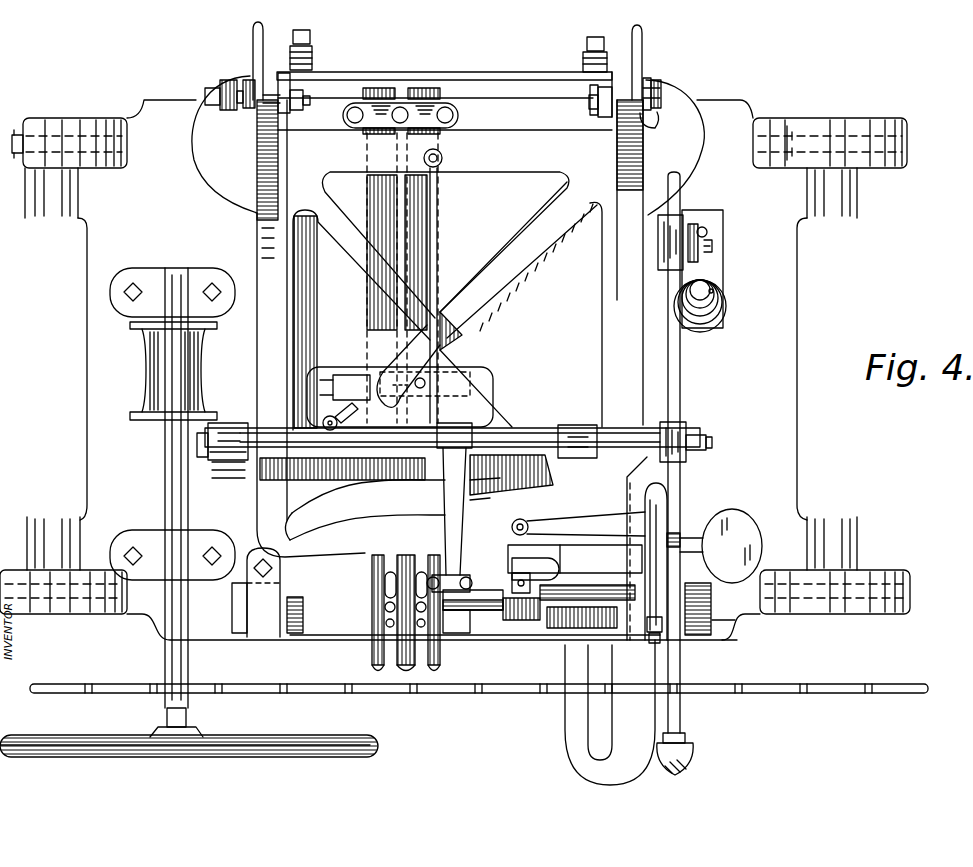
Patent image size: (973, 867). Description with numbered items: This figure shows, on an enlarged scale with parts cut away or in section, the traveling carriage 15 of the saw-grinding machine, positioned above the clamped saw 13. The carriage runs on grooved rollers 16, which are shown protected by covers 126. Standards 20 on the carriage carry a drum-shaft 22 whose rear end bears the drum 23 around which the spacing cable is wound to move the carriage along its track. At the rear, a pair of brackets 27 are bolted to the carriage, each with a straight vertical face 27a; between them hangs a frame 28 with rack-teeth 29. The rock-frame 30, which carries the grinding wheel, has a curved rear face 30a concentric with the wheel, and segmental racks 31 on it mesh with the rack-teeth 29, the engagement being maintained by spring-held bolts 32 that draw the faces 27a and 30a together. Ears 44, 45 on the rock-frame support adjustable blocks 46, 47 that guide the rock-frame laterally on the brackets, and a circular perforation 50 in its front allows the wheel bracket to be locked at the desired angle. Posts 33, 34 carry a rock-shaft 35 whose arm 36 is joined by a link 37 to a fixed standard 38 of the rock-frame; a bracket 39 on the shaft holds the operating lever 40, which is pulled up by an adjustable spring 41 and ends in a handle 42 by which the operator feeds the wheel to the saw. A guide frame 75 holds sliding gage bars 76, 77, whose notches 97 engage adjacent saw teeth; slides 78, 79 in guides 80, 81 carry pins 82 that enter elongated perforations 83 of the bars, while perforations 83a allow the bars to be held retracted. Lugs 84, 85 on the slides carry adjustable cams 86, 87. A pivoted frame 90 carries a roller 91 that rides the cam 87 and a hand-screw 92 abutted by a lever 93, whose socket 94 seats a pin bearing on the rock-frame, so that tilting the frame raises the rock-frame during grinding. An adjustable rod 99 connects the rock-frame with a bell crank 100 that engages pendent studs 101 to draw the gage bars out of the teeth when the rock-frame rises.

The saw 13 is at (820, 694).
The carriage 15 is at (96, 411).
The grooved rollers 16 is at (14, 156).
The standards 20 is at (160, 283).
The drum-shaft 22 is at (170, 463).
The drum 23 is at (148, 369).
The brackets 27 is at (254, 38).
The vertically disposed face 27a is at (268, 92).
The frame 28 is at (445, 71).
The rack-teeth 29 is at (607, 95).
The rock-frame 30 is at (607, 290).
The rear face 30a is at (268, 110).
The segmental racks 31 is at (286, 114).
The spring-held bolts 32 is at (306, 40).
The post 33 is at (575, 421).
The post 34 is at (226, 426).
The rock-shaft 35 is at (523, 420).
The arm 36 is at (476, 484).
The link 37 is at (443, 578).
The fixed standard 38 is at (431, 251).
The bracket 39 is at (688, 433).
The operating lever 40 is at (681, 364).
The adjustable spring 41 is at (716, 298).
The handle 42 is at (694, 758).
The ear 44 is at (675, 147).
The ear 45 is at (224, 144).
The adjustable block 46 is at (660, 80).
The adjustable block 47 is at (247, 90).
The circular perforation 50 is at (598, 744).
The guide frame 75 is at (460, 118).
The gage bar 76 is at (373, 204).
The gage bar 77 is at (415, 213).
The slide 78 is at (703, 636).
The slide 79 is at (714, 621).
The guide 80 is at (267, 592).
The guide 81 is at (684, 636).
The pin 82 is at (416, 607).
The elongated perforations 83 is at (416, 588).
The perforations 83a is at (417, 624).
The lug 84 is at (512, 551).
The lug 85 is at (560, 628).
The adjustable cam 86 is at (474, 610).
The adjustable cam 87 is at (587, 601).
The frame 90 is at (575, 560).
The roller 91 is at (520, 621).
The hand-screw 92 is at (721, 546).
The lever 93 is at (661, 520).
The socket 94 is at (523, 523).
The notches 97 is at (378, 671).
The adjustable rod 99 is at (325, 420).
The bell crank 100 is at (350, 375).
The pendent studs 101 is at (418, 378).
The covers 126 is at (50, 128).